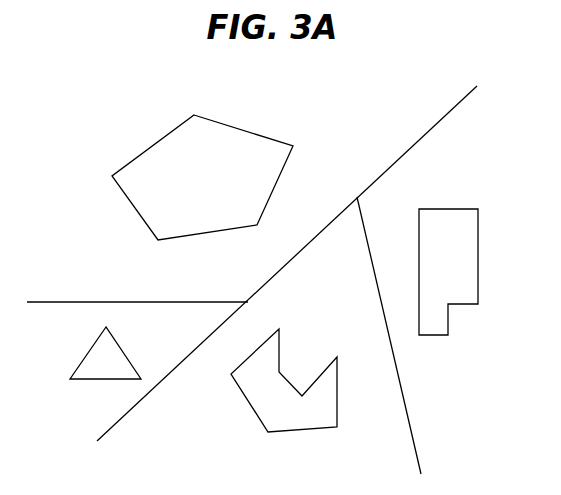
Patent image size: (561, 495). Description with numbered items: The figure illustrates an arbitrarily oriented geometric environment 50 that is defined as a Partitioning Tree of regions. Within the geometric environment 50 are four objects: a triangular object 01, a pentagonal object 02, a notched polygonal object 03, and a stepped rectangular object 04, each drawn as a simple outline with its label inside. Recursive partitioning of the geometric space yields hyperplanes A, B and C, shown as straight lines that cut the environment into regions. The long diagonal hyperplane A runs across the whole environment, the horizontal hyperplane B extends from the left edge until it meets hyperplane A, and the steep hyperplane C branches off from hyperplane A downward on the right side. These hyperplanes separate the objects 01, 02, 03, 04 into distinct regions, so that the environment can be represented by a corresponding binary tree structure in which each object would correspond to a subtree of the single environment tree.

The geometric environment 50 is at (115, 112).
The hyperplane A is at (403, 153).
The hyperplane B is at (77, 300).
The hyperplane C is at (409, 417).
The object 01 is at (93, 376).
The object 02 is at (187, 193).
The object 03 is at (288, 412).
The object 04 is at (437, 274).